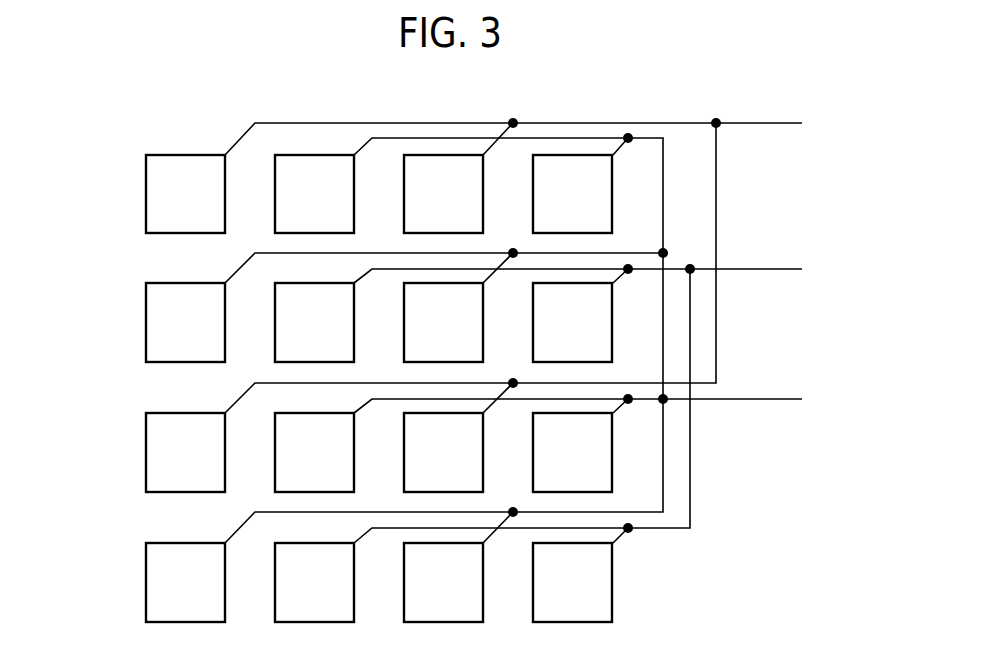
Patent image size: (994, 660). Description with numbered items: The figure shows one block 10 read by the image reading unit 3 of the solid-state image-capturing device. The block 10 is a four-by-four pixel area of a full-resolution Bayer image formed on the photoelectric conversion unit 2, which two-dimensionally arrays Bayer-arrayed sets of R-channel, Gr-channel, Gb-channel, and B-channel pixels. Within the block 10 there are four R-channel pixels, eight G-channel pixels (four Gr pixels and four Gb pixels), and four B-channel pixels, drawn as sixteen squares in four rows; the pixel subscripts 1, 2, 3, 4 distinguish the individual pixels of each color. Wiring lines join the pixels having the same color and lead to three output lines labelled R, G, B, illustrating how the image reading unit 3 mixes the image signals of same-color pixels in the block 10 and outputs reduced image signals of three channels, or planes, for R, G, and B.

The 4×4 pixel area (block) 10 is at (106, 545).
The first pixel set (R1, Gb1, Gr1, B1) 1 is at (250, 258).
The photoelectric conversion unit 2 is at (508, 258).
The image reading unit 3 is at (250, 517).
The fourth pixel set (R4, Gb4, Gr4, B4) 4 is at (508, 517).
The R channel R is at (513, 251).
The G channel G is at (513, 338).
The B channel B is at (578, 392).